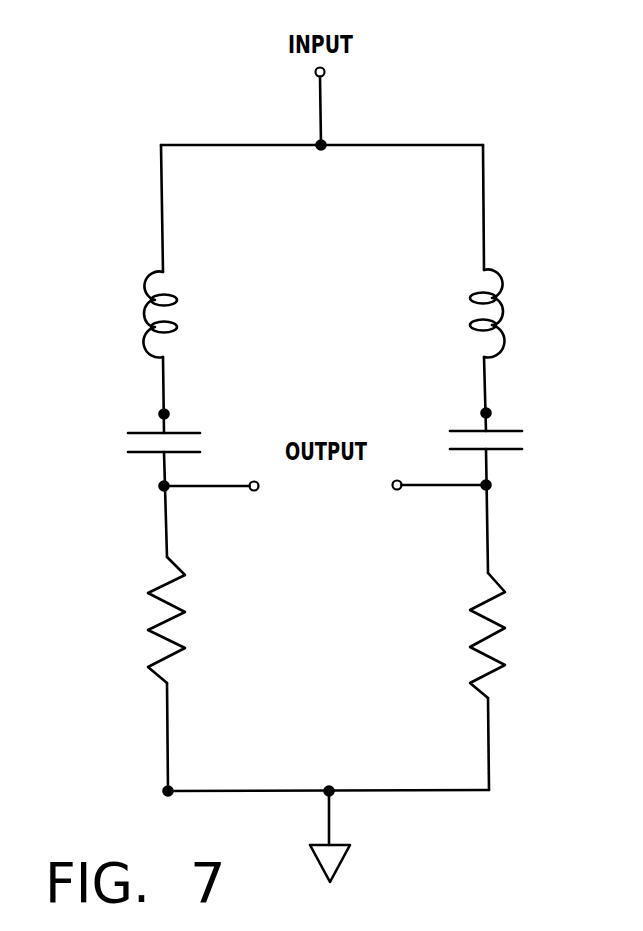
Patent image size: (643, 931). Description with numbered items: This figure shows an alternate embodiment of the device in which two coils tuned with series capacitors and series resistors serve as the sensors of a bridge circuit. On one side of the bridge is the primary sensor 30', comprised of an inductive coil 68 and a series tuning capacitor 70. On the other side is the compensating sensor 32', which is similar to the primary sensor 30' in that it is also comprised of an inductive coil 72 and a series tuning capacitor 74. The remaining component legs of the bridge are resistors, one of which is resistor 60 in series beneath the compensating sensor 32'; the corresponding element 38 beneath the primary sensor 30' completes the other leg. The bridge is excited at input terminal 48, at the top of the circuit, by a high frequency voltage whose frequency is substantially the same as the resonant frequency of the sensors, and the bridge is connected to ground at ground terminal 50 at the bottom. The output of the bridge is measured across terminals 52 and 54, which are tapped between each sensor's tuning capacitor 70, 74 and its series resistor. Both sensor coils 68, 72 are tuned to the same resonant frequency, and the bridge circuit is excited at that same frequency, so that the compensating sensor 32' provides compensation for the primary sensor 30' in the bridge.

The input terminal 48 is at (321, 113).
The inductive coil 68 is at (153, 308).
The primary sensor 30' is at (108, 314).
The inductive coil 72 is at (551, 300).
The compensating sensor 32' is at (551, 313).
The series tuning capacitor 70 is at (188, 432).
The series tuning capacitor 74 is at (513, 438).
The output terminal 52 is at (253, 491).
The output terminal 54 is at (396, 490).
The tuning capacitor 38 is at (158, 621).
The resistor 60 is at (502, 622).
The ground terminal 50 is at (330, 818).